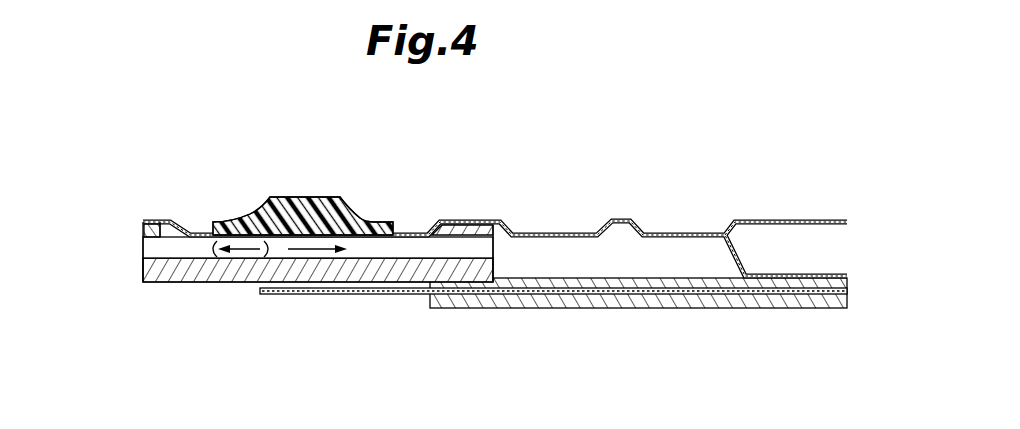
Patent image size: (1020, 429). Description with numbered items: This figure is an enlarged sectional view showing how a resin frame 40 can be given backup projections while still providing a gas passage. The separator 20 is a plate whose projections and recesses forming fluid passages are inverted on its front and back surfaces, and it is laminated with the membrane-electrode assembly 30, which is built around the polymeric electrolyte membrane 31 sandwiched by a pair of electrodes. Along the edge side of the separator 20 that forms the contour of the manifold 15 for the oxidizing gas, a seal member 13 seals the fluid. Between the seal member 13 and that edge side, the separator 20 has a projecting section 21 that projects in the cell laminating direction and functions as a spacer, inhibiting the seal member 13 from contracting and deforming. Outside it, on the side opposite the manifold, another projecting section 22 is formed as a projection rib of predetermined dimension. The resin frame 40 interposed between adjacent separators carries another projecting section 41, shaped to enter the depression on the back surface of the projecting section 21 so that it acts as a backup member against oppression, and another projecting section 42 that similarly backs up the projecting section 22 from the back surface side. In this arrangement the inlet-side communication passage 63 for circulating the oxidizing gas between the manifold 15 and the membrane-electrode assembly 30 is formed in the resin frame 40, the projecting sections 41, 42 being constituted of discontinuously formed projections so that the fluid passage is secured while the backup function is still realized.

The seal member 13 is at (303, 197).
The manifold 15 is at (59, 262).
The separator 20 is at (693, 233).
The projecting section 21 is at (162, 222).
The another projecting section 22 is at (491, 221).
The membrane-electrode assembly 30 is at (611, 322).
The polymeric electrolyte membrane 31 is at (348, 296).
The resin frame 40 is at (200, 283).
The another projecting section 41 is at (143, 229).
The another projecting section 42 is at (495, 236).
The inlet-side communication passage 63 is at (416, 246).